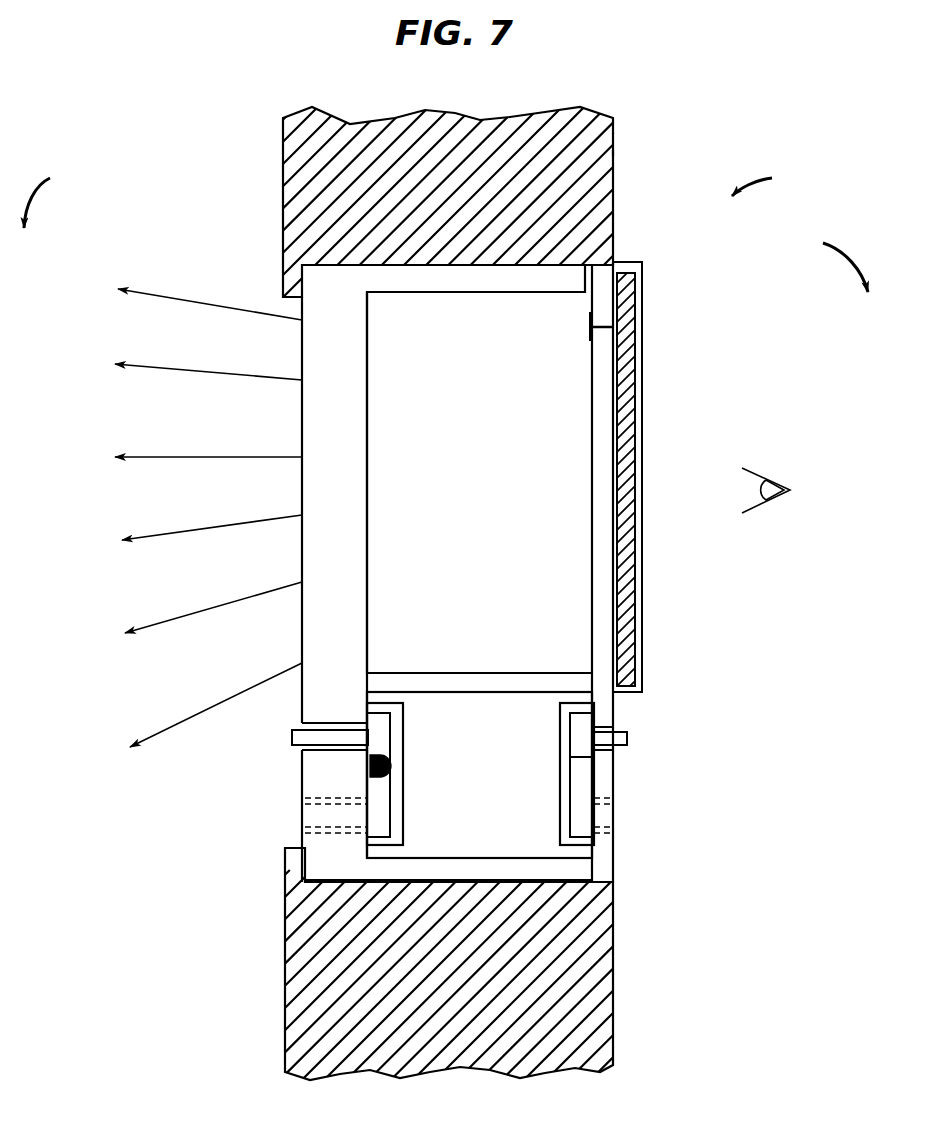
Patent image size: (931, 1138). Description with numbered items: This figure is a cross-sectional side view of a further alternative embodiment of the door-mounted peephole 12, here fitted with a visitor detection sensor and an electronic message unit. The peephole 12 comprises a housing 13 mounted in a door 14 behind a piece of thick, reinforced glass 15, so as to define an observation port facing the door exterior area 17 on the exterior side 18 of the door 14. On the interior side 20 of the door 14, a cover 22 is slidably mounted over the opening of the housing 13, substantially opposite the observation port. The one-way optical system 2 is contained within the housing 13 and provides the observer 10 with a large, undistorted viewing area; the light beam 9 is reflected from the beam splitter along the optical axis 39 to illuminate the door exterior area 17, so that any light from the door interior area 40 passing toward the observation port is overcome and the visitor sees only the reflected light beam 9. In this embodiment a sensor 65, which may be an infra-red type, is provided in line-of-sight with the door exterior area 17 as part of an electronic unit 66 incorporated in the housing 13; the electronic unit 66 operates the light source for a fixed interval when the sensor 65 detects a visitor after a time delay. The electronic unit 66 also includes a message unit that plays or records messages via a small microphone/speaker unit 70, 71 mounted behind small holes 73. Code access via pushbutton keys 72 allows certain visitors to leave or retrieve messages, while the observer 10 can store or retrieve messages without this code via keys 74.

The optical system 2 is at (580, 455).
The light beam 9 is at (175, 298).
The observer 10 is at (760, 478).
The door-mounted peephole 12 is at (767, 178).
The housing 13 is at (592, 282).
The door 14 is at (598, 210).
The reinforced glass 15 is at (322, 287).
The door exterior area 17 is at (52, 189).
The exterior side 18 is at (283, 180).
The interior side 20 is at (613, 152).
The cover 22 is at (625, 350).
The optical axis 39 is at (180, 458).
The door interior area 40 is at (833, 254).
The sensor 65 is at (370, 767).
The electronic unit 66 is at (558, 735).
The microphone/speaker unit 70 is at (378, 817).
The microphone/speaker unit 71 is at (598, 815).
The pushbutton keys 72 is at (292, 737).
The small holes 73 is at (327, 805).
The keys 74 is at (630, 737).